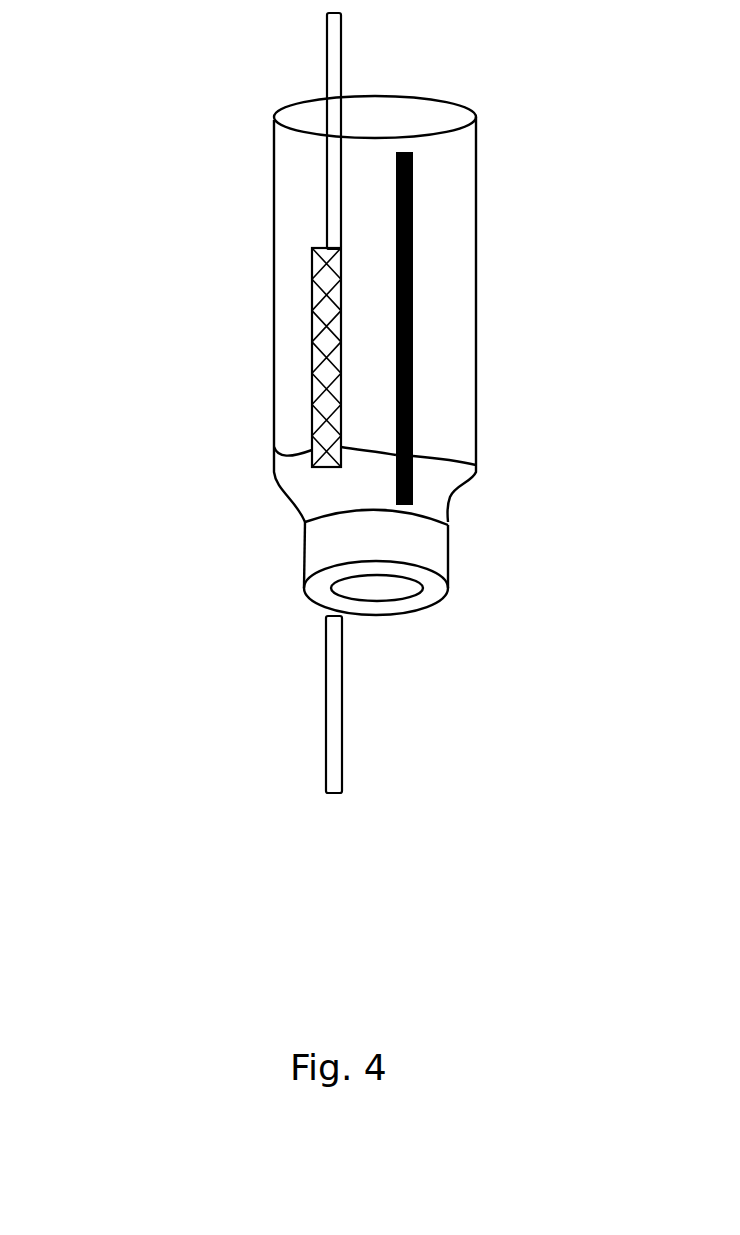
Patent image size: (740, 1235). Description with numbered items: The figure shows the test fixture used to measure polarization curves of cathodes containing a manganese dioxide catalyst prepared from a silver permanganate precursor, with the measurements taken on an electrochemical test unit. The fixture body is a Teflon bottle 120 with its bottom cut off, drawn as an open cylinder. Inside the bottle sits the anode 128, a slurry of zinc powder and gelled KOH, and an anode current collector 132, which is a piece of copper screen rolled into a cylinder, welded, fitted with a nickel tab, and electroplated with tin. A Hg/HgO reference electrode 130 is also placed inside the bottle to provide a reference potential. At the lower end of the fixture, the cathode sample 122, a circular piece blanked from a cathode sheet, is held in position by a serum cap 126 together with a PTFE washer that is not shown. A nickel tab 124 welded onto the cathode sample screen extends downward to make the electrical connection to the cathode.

The Teflon bottle 120 is at (266, 205).
The cathode sample 122 is at (433, 570).
The nickel tab 124 is at (278, 695).
The serum cap 126 is at (247, 559).
The anode 128 is at (507, 475).
The Hg/HgO reference electrode 130 is at (448, 245).
The anode current collector 132 is at (262, 326).